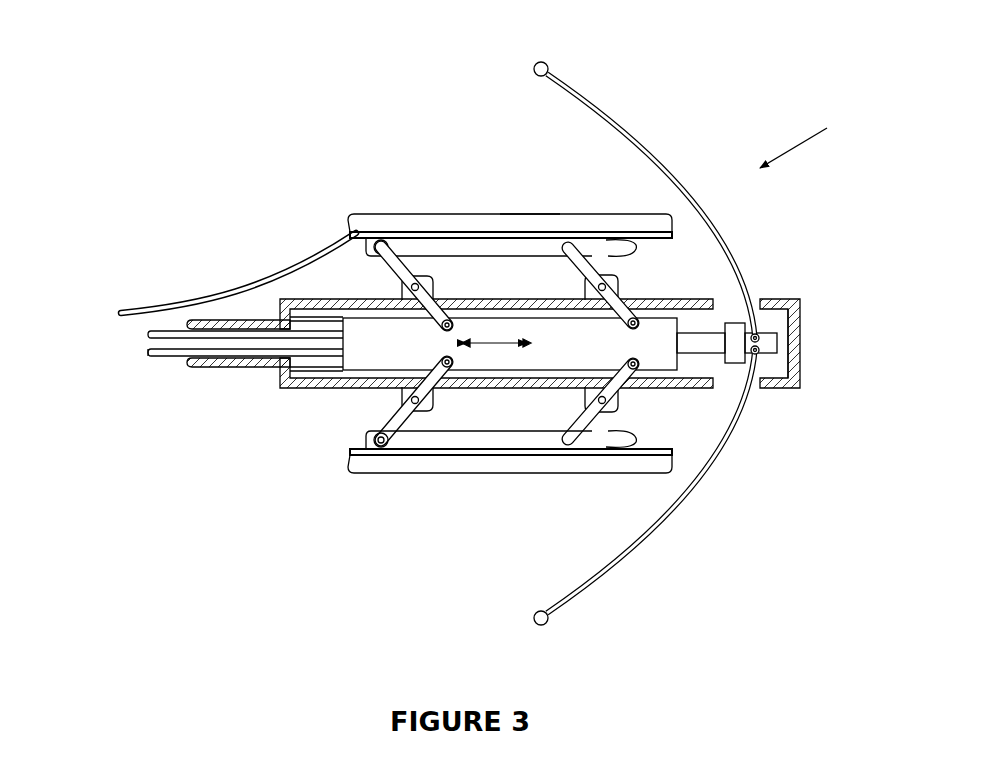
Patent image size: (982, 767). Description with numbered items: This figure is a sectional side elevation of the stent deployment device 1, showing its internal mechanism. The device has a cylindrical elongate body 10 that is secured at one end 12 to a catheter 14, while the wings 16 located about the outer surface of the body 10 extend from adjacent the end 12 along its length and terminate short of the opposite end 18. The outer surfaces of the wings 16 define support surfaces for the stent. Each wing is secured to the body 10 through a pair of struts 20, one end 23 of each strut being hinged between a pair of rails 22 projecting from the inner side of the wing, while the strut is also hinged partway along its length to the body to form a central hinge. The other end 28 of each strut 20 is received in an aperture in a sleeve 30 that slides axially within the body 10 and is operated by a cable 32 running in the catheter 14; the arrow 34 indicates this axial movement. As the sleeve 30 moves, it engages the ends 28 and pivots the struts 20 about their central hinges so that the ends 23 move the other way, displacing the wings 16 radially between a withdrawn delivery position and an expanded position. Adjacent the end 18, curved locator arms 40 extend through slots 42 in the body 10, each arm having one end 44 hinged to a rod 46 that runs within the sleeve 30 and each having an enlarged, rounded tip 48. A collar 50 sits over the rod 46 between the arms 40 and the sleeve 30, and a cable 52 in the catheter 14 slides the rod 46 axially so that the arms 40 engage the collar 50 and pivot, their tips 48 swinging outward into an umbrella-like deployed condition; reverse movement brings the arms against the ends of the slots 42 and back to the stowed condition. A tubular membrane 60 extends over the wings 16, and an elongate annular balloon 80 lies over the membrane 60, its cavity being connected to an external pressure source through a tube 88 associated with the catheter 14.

The stent deployment device 1 is at (801, 141).
The elongate body 10 is at (304, 392).
The end of the body 12 is at (282, 378).
The catheter 14 is at (180, 378).
The elongate wings 16 is at (466, 228).
The opposite end of the body 18 is at (798, 340).
The struts 20 is at (398, 275).
The rails 22 is at (497, 242).
The end of the strut 23 is at (373, 242).
The other end of the strut 28 is at (440, 358).
The sleeve 30 is at (662, 328).
The cable 32 is at (168, 333).
The arrow 34 is at (487, 343).
The elongate locator arms 40 is at (575, 100).
The slot 42 is at (752, 302).
The end of the arm 44 is at (759, 334).
The rod 46 is at (706, 340).
The tip of the arm 48 is at (544, 62).
The collar 50 is at (702, 350).
The cable 52 is at (150, 353).
The tubular membrane 60 is at (416, 232).
The elongate annular balloon 80 is at (523, 222).
The tube 88 is at (268, 282).